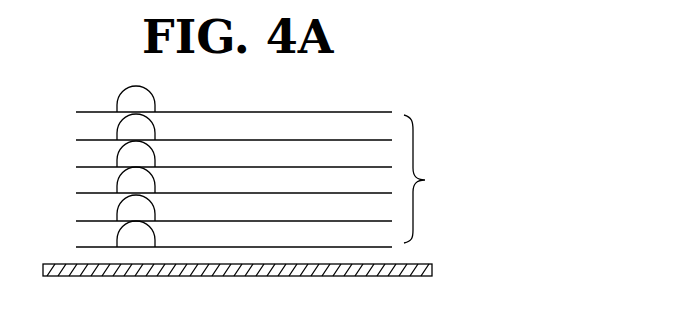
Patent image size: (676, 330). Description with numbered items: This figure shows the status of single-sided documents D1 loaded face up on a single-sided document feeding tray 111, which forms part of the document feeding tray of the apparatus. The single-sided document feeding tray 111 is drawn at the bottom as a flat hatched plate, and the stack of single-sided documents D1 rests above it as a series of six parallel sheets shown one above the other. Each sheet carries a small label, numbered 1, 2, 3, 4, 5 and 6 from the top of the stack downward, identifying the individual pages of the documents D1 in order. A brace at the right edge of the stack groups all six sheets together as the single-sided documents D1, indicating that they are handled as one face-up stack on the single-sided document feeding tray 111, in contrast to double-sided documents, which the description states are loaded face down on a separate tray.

The first layer 1 is at (234, 100).
The second layer 2 is at (234, 128).
The third layer 3 is at (234, 155).
The fourth layer 4 is at (234, 181).
The fifth layer 5 is at (234, 209).
The sixth layer 6 is at (234, 235).
The single-sided documents D1 is at (430, 179).
The single-sided document feeding tray 111 is at (432, 268).